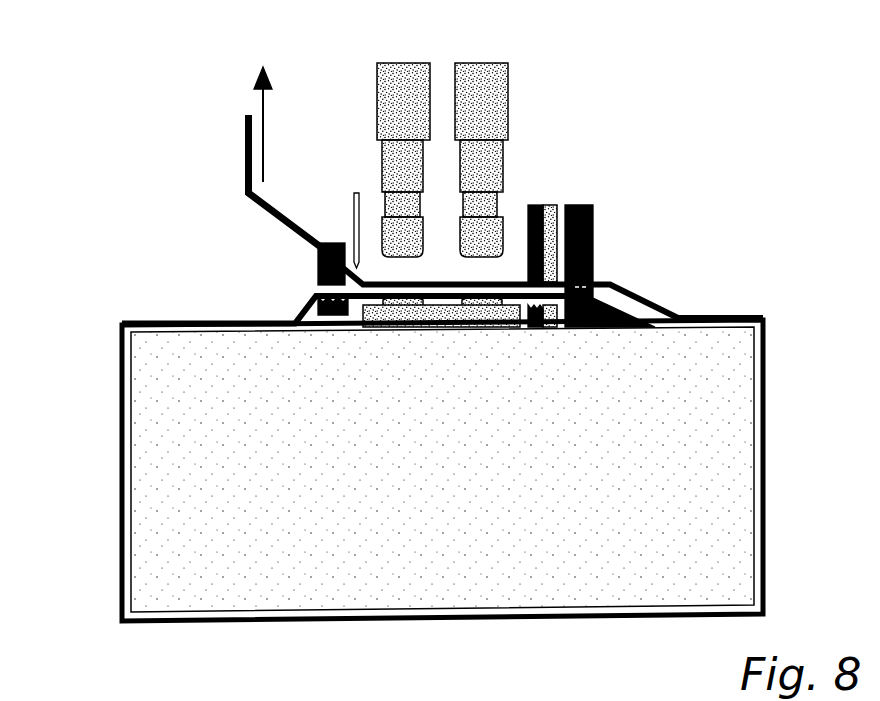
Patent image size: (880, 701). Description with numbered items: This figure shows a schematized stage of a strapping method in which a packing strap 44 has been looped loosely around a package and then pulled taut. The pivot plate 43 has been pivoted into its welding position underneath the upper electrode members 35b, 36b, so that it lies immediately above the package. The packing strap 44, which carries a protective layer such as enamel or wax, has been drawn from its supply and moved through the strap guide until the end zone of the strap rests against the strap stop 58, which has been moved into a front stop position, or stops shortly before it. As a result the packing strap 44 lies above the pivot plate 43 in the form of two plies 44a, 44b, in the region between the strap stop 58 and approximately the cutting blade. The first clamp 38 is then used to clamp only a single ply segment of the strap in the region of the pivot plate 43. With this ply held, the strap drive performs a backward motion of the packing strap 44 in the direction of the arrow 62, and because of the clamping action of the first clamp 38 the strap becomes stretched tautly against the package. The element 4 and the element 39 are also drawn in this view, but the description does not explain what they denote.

The battery cell / housing body 4 is at (693, 493).
The first clamp 38 is at (290, 279).
The contact post 39 is at (563, 199).
The pivot plate 43 is at (502, 323).
The packing strap 44 is at (275, 213).
The ply of the packing strap 44a is at (362, 297).
The ply of the packing strap 44b is at (538, 180).
The strap stop 58 is at (594, 262).
The arrow 62 is at (263, 102).
The upper electrode member 35b is at (510, 277).
The upper electrode member 36b is at (388, 243).